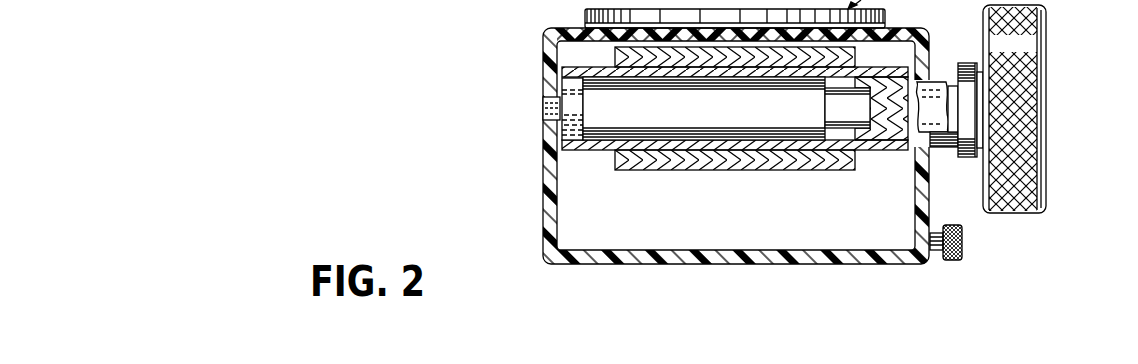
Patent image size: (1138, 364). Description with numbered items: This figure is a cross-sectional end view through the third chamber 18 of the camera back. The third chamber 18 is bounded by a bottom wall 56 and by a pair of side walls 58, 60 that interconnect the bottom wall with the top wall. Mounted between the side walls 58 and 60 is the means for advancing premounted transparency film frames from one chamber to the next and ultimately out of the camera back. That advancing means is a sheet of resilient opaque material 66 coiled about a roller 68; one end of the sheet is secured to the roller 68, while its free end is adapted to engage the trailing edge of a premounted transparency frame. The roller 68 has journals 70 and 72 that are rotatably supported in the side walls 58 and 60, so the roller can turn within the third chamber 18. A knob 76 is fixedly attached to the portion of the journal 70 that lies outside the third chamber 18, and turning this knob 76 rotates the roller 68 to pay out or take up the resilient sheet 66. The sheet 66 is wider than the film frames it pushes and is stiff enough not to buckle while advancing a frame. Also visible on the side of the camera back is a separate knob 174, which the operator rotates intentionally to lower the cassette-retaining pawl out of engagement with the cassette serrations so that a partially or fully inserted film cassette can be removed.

The third chamber 18 is at (736, 171).
The bottom wall 56 is at (668, 265).
The side wall 58 is at (915, 210).
The side wall 60 is at (557, 210).
The sheet of resilient opaque material 66 is at (717, 170).
The roller 68 is at (593, 152).
The journal 70 is at (937, 82).
The journal 72 is at (545, 104).
The knob 76 is at (1042, 72).
The knob 174 is at (967, 247).